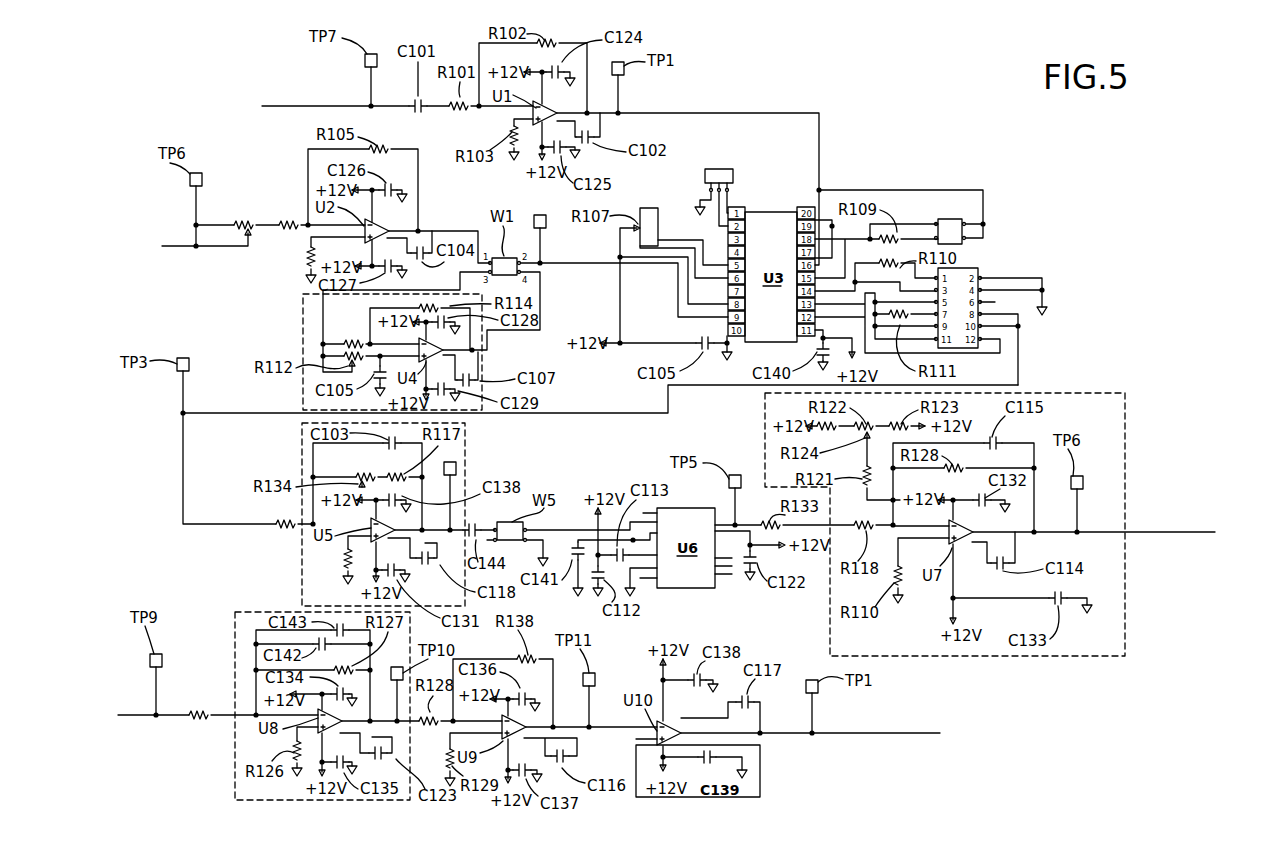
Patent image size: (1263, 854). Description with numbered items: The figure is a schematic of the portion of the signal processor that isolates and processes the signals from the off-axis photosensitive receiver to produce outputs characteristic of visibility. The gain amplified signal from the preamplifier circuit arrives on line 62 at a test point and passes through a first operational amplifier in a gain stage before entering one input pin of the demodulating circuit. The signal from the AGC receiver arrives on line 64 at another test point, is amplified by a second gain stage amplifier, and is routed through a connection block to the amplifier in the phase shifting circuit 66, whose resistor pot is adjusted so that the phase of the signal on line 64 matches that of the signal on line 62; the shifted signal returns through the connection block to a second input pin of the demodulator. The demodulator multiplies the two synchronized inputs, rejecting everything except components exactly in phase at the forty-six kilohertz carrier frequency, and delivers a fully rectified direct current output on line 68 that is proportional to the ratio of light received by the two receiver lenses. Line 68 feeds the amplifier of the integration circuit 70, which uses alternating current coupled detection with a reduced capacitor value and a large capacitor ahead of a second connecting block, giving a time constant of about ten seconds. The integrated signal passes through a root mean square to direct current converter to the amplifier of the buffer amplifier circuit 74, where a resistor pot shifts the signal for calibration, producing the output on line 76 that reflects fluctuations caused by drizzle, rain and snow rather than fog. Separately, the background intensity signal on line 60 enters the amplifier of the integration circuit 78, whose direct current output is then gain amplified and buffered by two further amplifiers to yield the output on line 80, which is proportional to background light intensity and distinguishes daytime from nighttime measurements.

The line 60 is at (142, 718).
The line 62 is at (343, 106).
The line 64 is at (178, 248).
The phase shifting circuit 66 is at (302, 323).
The line 68 is at (643, 413).
The integration circuit 70 is at (302, 545).
The buffer amplifier circuit 74 is at (1125, 470).
The output line 76 is at (1140, 532).
The integration circuit 78 is at (236, 650).
The line 80 is at (845, 735).